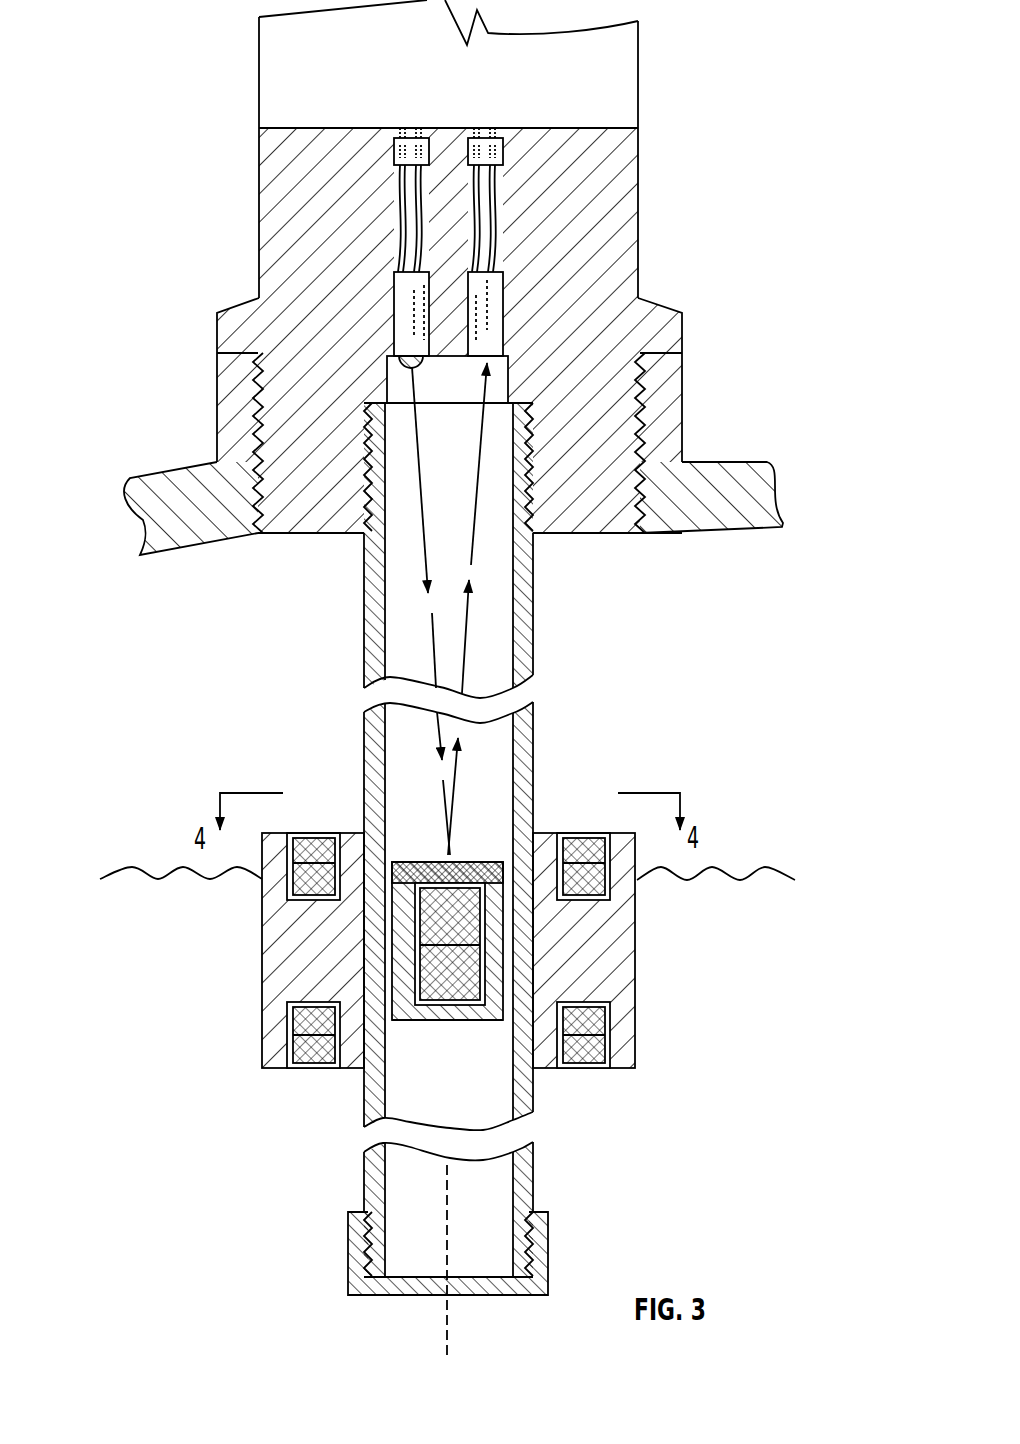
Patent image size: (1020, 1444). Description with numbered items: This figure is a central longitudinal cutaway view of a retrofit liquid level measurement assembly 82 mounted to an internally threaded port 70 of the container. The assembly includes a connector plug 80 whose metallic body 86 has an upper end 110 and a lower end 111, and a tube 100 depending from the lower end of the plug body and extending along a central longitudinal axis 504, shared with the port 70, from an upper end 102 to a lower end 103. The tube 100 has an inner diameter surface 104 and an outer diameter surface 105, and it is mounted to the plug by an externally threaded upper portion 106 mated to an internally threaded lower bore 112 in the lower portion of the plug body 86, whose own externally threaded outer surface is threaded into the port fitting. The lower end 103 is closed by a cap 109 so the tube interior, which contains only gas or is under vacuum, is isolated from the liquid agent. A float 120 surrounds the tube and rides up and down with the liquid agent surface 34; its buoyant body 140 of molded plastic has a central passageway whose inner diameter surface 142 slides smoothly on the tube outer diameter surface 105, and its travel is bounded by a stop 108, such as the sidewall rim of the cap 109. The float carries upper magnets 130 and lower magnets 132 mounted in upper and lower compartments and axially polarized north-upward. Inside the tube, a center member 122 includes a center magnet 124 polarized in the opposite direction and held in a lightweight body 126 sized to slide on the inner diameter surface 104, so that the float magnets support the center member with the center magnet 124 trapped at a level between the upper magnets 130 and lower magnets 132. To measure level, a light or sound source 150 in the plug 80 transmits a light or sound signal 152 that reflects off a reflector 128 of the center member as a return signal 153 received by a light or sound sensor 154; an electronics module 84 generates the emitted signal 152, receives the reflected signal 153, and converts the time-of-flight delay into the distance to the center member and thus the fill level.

The liquid agent surface 34 is at (702, 868).
The port 70 is at (235, 408).
The connector plug 80 is at (459, 266).
The liquid level measurement assembly 82 is at (172, 942).
The electronics module 84 is at (585, 78).
The body 86 is at (412, 295).
The tube 100 is at (452, 883).
The upper end 102 is at (378, 398).
The lower end 103 is at (435, 1285).
The inner diameter surface 104 is at (350, 1257).
The outer diameter surface 105 is at (365, 1167).
The externally threaded upper portion 106 is at (540, 428).
The stop 108 is at (545, 1210).
The cap 109 is at (362, 1290).
The upper end 110 is at (298, 127).
The lower end 111 is at (553, 535).
The internally threaded lower bore 112 is at (519, 511).
The float 120 is at (480, 922).
The center member 122 is at (423, 1033).
The center magnet 124 is at (530, 1048).
The lightweight body 126 is at (404, 945).
The reflector 128 is at (377, 885).
The upper magnets 130 is at (318, 820).
The lower magnets 132 is at (300, 1085).
The buoyant body 140 is at (617, 937).
The inner diameter surface 142 is at (462, 990).
The light or sound source 150 is at (405, 327).
The light or sound signal 152 is at (433, 638).
The return/reflected light or sound signal 153 is at (466, 660).
The light or sound sensor 154 is at (493, 302).
The central longitudinal axis 504 is at (447, 1316).